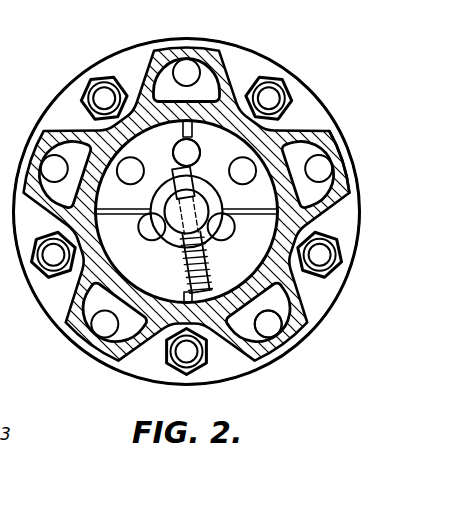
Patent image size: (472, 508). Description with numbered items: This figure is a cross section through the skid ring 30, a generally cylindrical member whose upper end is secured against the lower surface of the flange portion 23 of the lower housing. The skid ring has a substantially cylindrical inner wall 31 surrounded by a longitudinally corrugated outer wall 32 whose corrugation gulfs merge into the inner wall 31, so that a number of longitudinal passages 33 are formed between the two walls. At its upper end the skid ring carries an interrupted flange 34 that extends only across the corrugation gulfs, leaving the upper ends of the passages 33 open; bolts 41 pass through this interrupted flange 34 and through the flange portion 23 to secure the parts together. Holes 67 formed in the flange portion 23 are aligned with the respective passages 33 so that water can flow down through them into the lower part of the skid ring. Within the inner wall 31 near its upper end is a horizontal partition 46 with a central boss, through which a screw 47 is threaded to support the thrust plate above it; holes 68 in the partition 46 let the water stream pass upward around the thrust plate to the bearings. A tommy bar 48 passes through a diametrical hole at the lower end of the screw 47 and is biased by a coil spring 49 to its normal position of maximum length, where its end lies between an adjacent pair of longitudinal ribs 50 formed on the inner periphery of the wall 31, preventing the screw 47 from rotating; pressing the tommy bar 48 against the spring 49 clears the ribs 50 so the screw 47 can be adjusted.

The flange portion 23 is at (234, 50).
The skid ring 30 is at (370, 291).
The inner wall 31 is at (99, 168).
The outer wall 32 is at (274, 77).
The longitudinal passages 33 is at (163, 67).
The interrupted flange 34 is at (304, 116).
The bolts 41 is at (107, 79).
The horizontal partition 46 is at (318, 128).
The screw 47 is at (212, 233).
The tommy bar 48 is at (264, 326).
The coil spring 49 is at (228, 255).
The longitudinal ribs 50 is at (200, 145).
The holes 67 is at (193, 61).
The holes 68 is at (175, 147).